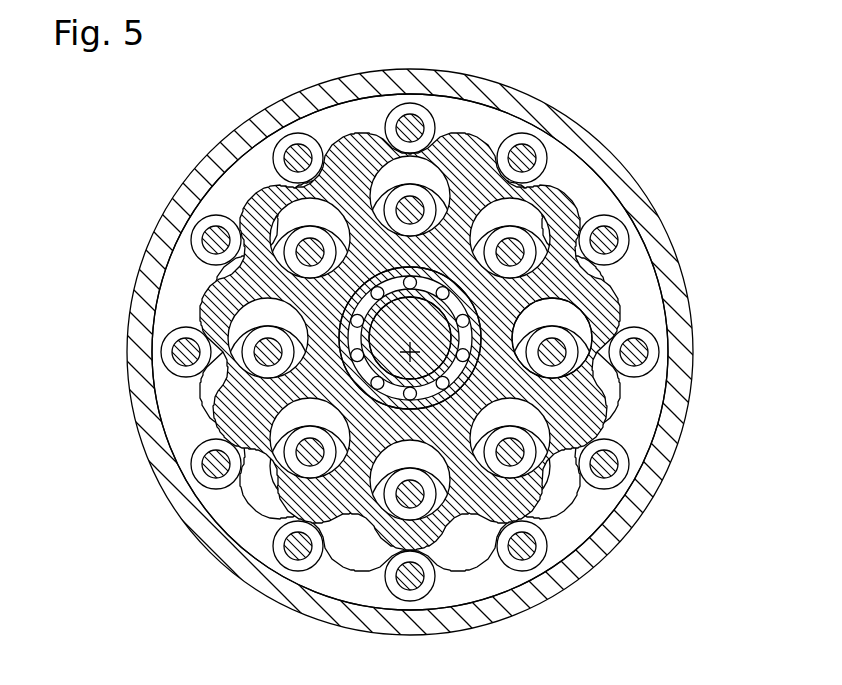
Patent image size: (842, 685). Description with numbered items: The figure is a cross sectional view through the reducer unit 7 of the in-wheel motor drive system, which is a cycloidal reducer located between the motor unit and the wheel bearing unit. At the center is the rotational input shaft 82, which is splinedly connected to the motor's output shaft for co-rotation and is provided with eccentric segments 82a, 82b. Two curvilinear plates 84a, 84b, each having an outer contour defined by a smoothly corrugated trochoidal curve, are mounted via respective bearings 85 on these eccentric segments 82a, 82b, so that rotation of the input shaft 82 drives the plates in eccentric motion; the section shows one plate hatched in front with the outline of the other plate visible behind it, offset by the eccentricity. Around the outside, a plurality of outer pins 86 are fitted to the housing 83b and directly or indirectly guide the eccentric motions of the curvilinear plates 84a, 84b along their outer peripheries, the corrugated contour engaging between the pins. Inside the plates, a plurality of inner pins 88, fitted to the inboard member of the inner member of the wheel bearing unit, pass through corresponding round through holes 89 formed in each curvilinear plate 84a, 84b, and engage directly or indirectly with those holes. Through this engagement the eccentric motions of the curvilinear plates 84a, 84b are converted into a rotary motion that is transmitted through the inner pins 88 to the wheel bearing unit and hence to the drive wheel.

The reducer unit 7 is at (213, 135).
The rotational input shaft 82 is at (359, 350).
The eccentric segment 82a is at (220, 437).
The eccentric segment 82b is at (367, 360).
The housing 83b is at (180, 206).
The curvilinear plate 84a is at (556, 272).
The curvilinear plate 84b is at (557, 197).
The bearing 85 is at (347, 306).
The outer pin 86 is at (394, 121).
The inner pin 88 is at (502, 238).
The through hole 89 is at (585, 307).